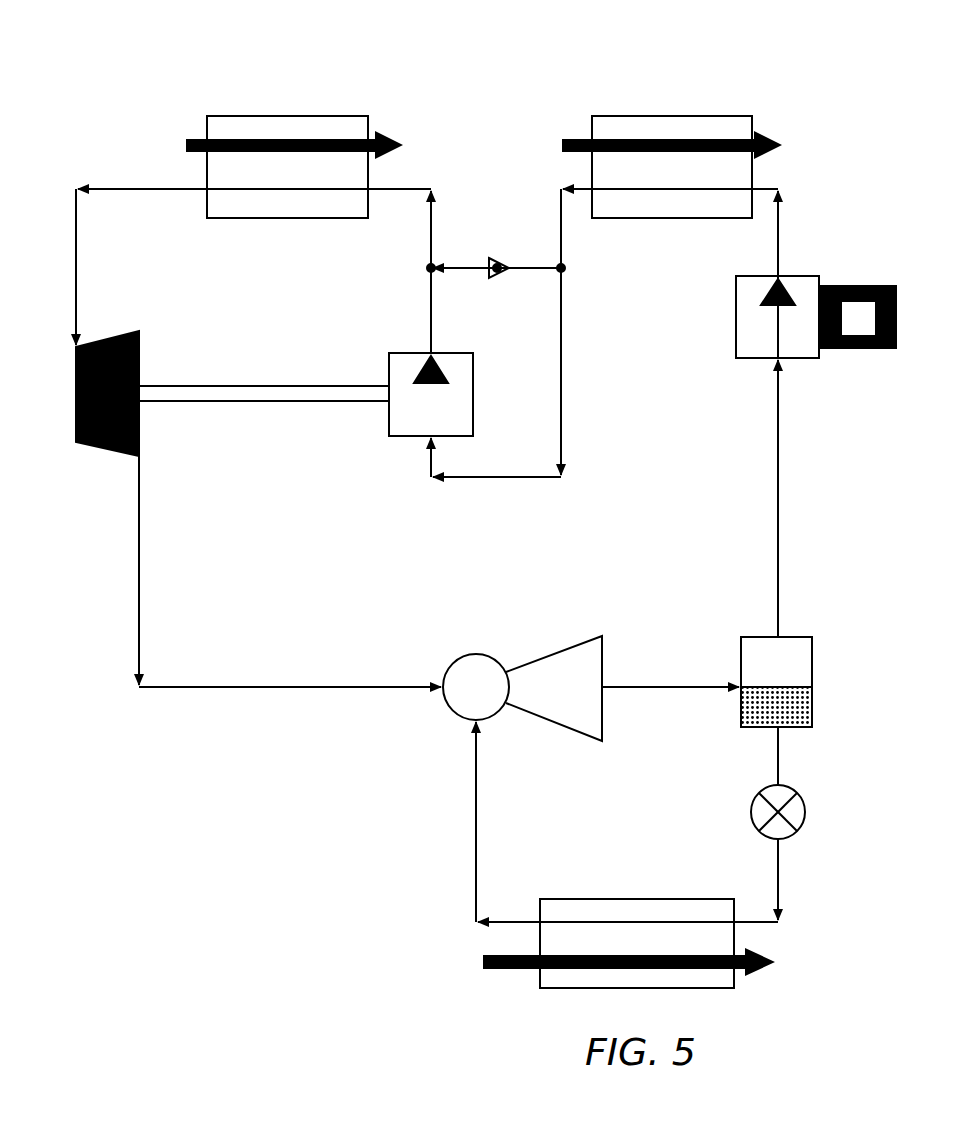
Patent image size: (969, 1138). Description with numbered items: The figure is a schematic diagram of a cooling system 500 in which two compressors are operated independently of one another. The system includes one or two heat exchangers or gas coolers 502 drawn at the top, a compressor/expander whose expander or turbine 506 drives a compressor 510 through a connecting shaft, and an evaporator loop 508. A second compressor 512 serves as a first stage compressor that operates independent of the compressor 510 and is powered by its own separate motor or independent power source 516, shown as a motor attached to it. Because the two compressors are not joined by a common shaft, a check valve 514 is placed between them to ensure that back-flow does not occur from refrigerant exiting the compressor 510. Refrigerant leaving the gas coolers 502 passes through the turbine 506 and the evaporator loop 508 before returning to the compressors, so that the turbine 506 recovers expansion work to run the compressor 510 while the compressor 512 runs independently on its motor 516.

The cooling system 500 is at (111, 42).
The heat exchangers or gas coolers 502 is at (604, 97).
The expander or turbine 506 is at (50, 387).
The evaporator loop 508 is at (815, 770).
The compressor 510 is at (405, 352).
The compressor 512 is at (746, 360).
The check valve 514 is at (500, 257).
The motor or independent power source 516 is at (852, 285).